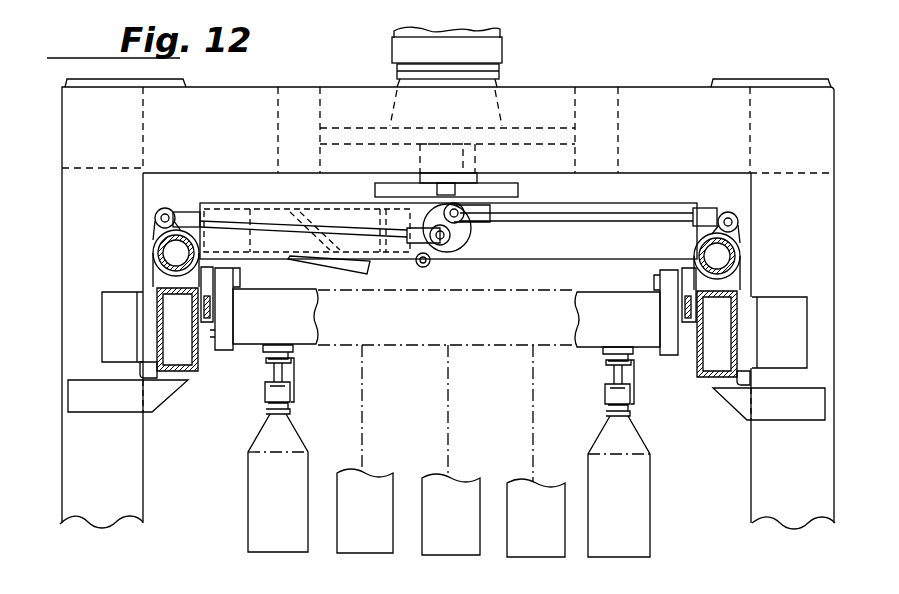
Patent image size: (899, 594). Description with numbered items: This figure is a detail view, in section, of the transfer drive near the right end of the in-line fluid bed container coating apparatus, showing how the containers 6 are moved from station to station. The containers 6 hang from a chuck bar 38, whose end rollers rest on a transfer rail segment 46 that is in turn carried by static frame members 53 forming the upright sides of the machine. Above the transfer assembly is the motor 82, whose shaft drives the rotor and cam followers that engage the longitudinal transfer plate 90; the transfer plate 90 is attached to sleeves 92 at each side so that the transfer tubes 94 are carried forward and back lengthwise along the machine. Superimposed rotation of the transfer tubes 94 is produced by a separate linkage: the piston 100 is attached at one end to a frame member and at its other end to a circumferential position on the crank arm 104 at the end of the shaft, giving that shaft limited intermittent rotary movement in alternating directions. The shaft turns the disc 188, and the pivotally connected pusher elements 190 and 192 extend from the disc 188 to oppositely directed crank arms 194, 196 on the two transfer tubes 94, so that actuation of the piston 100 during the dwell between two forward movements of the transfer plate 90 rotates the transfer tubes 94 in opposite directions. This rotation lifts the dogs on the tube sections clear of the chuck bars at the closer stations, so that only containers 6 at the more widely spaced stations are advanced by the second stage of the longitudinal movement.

The static frame member 53 is at (80, 135).
The motor 82 is at (492, 30).
The longitudinal transfer plate 90 is at (280, 203).
The sleeve 92 is at (183, 208).
The crank arm 194 is at (160, 235).
The right bearing housing 196 is at (735, 242).
The transfer tube 94 is at (158, 251).
The disc 188 is at (465, 237).
The pusher element 192 is at (577, 222).
The piston 100 is at (352, 265).
The pusher element 190 is at (387, 248).
The crank arm 104 is at (435, 270).
The chuck bar 38 is at (256, 330).
The transfer rail segment 46 is at (188, 380).
The container 6 is at (345, 487).